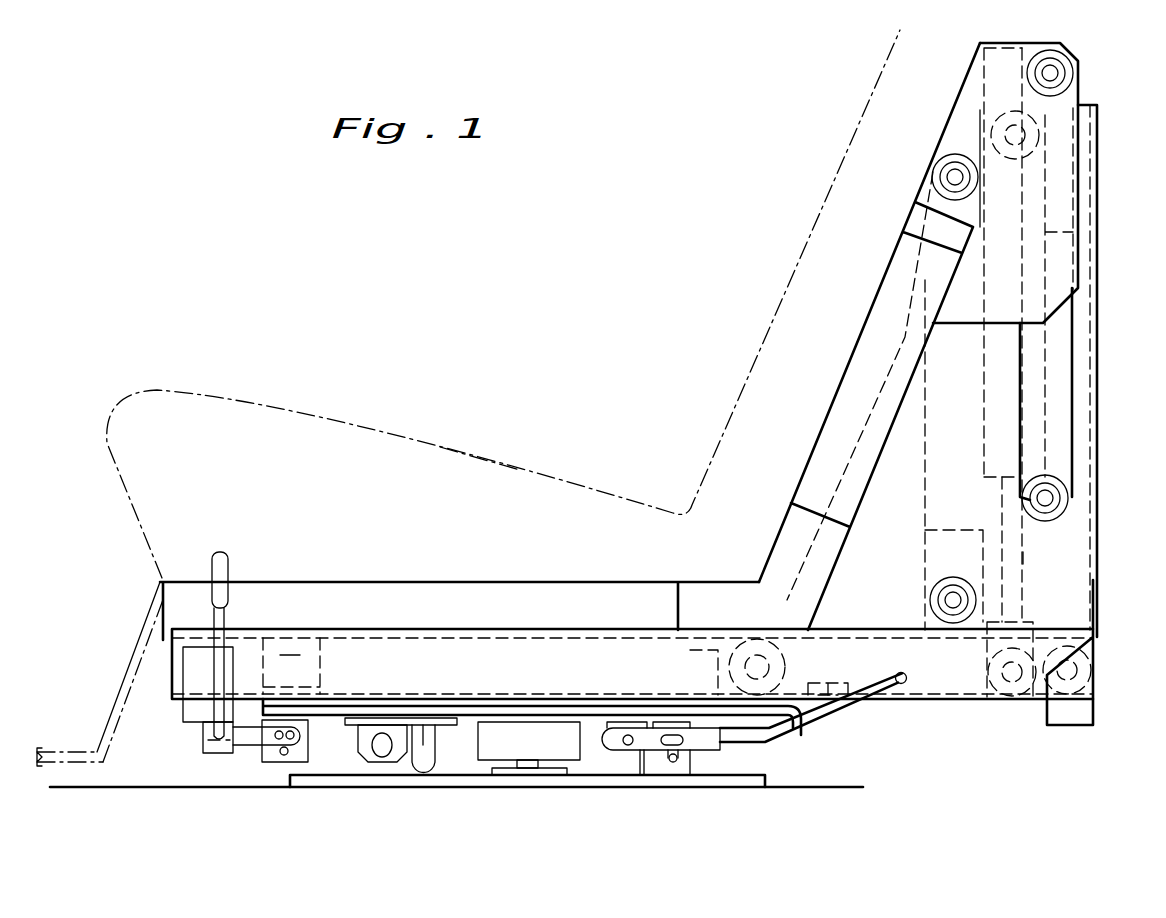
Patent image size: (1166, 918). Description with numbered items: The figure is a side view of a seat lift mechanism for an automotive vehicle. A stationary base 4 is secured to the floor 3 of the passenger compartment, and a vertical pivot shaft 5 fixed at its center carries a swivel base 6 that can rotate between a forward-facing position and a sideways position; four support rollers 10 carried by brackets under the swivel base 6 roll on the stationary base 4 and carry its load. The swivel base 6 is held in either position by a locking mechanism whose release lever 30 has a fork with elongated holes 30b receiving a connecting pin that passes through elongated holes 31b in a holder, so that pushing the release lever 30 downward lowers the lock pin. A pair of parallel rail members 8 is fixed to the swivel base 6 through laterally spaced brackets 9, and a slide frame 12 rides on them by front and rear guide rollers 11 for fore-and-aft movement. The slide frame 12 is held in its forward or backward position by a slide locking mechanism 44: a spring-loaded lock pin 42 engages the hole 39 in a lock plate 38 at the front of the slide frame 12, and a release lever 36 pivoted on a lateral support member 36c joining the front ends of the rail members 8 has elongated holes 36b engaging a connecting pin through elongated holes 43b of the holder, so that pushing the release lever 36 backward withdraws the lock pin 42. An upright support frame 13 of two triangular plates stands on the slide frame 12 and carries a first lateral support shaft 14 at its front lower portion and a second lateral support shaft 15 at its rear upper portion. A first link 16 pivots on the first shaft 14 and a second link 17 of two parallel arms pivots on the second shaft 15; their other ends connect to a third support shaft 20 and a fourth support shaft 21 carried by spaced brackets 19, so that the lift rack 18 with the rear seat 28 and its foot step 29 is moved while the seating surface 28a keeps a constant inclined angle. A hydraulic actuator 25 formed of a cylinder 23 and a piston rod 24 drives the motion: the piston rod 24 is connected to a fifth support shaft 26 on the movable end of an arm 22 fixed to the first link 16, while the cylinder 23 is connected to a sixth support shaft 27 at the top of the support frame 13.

The floor 3 is at (58, 787).
The stationary base 4 is at (593, 780).
The vertical pivot shaft 5 is at (533, 770).
The swivel base 6 is at (520, 710).
The rail members 8 is at (358, 657).
The brackets 9 is at (408, 702).
The support rollers 10 is at (415, 760).
The guide rollers 11 is at (737, 648).
The slide frame 12 is at (717, 678).
The support frame 13 is at (1090, 385).
The first lateral support shaft 14 is at (953, 600).
The second lateral support shaft 15 is at (1045, 498).
The first link 16 is at (928, 412).
The second link 17 is at (1058, 443).
The lift rack 18 is at (818, 440).
The brackets 19 is at (1000, 70).
The third lateral support shaft 20 is at (955, 177).
The fourth lateral support shaft 21 is at (1050, 73).
The arm 22 is at (1000, 615).
The cylinder 23 is at (1045, 235).
The piston rod 24 is at (1023, 563).
The actuator 25 is at (1046, 340).
The fifth lateral support shaft 26 is at (1003, 700).
The sixth lateral support shaft 27 is at (967, 100).
The rear seat 28 is at (260, 400).
The seating surface 28a is at (462, 449).
The foot step 29 is at (118, 687).
The release lever 30 is at (897, 687).
The elongated holes 30b is at (682, 742).
The elongated holes 31b is at (673, 762).
The release lever 36 is at (222, 552).
The elongated holes 36b is at (267, 747).
The lateral support member 36c is at (192, 713).
The lock plate 38 is at (807, 682).
The hole 39 is at (825, 707).
The lock pin 42 is at (280, 680).
The elongated holes 43b is at (280, 753).
The slide locking mechanism 44 is at (297, 677).